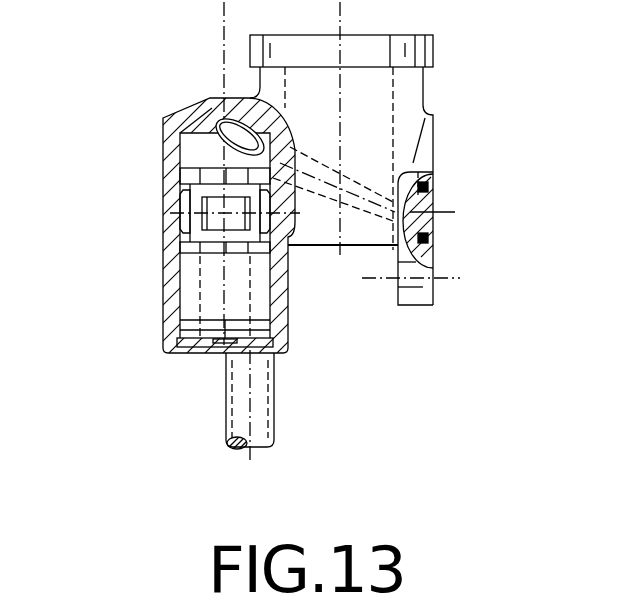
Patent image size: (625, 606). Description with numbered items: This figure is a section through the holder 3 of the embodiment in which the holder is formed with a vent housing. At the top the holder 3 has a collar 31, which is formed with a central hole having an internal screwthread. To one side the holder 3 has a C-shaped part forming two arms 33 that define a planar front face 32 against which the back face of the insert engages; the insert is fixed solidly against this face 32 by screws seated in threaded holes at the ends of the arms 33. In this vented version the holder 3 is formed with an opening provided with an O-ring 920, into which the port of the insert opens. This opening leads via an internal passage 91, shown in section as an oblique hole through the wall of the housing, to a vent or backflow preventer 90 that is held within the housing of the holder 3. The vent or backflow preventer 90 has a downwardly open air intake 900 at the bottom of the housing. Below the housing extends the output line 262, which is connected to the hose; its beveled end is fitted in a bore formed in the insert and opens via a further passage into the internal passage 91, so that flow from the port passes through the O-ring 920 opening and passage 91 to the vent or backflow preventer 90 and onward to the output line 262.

The holder 3 is at (470, 82).
The collar 31 is at (428, 53).
The planar front face 32 is at (423, 283).
The arms 33 is at (419, 300).
The vent or backflow preventer 90 is at (222, 232).
The internal passage 91 is at (224, 128).
The output line 262 is at (236, 417).
The air intake 900 is at (207, 350).
The O-ring 920 is at (433, 180).